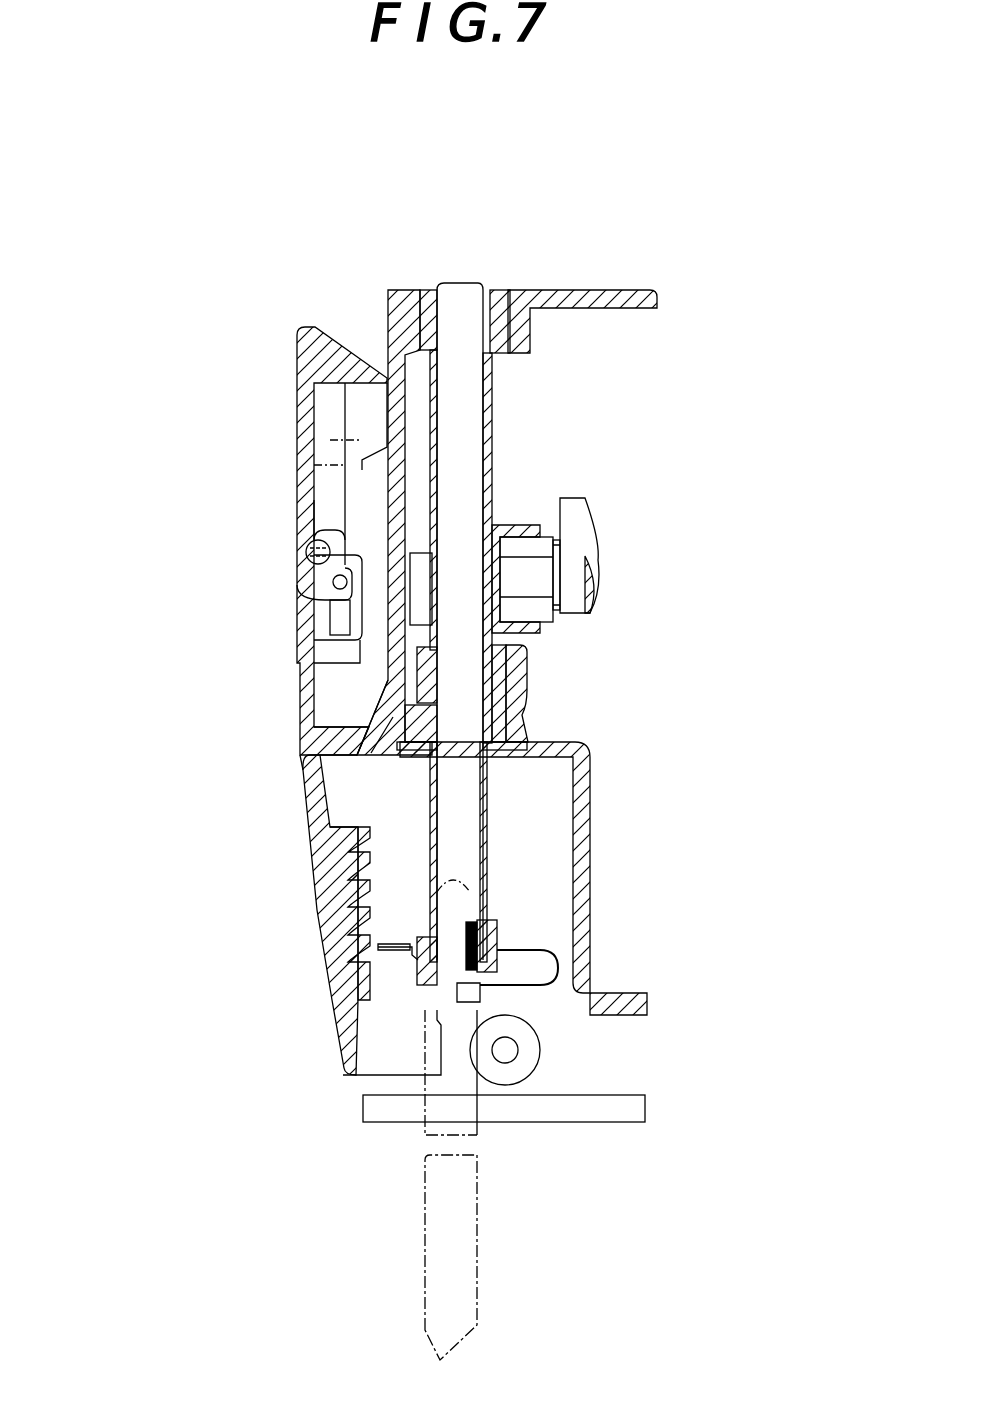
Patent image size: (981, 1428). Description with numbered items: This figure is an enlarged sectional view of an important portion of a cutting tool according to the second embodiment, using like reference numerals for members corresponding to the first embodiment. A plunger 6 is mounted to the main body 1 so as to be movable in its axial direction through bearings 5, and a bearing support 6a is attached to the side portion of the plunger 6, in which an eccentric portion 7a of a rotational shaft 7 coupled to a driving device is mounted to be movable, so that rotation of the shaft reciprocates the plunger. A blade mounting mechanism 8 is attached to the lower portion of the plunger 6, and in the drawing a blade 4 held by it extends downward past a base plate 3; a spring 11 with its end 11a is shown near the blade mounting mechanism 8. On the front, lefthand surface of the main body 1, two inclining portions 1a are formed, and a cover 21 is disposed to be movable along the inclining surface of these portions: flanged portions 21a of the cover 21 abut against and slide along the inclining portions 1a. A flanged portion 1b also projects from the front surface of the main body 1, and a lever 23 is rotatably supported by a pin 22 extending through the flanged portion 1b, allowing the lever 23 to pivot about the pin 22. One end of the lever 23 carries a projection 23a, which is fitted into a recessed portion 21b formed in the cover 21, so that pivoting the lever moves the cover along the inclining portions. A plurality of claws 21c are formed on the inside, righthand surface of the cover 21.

The main body 1 is at (615, 312).
The inclining portion 1a is at (353, 448).
The flanged portion 1b is at (350, 511).
The base plate 3 is at (630, 1100).
The saw blade 4 is at (470, 1248).
The bearing 5 is at (500, 290).
The plunger 6 is at (458, 305).
The bearing support 6a is at (510, 528).
The rotational shaft 7 is at (580, 523).
The eccentric portion 7a is at (530, 585).
The blade mounting mechanism 8 is at (505, 912).
The spring 11 is at (557, 957).
The spring end 11a is at (400, 965).
The cover 21 is at (310, 772).
The flanged portion 21a is at (377, 458).
The recessed portion 21b is at (335, 628).
The claw 21c is at (350, 830).
The pin 22 is at (302, 548).
The lever 23 is at (300, 462).
The projection 23a is at (300, 588).